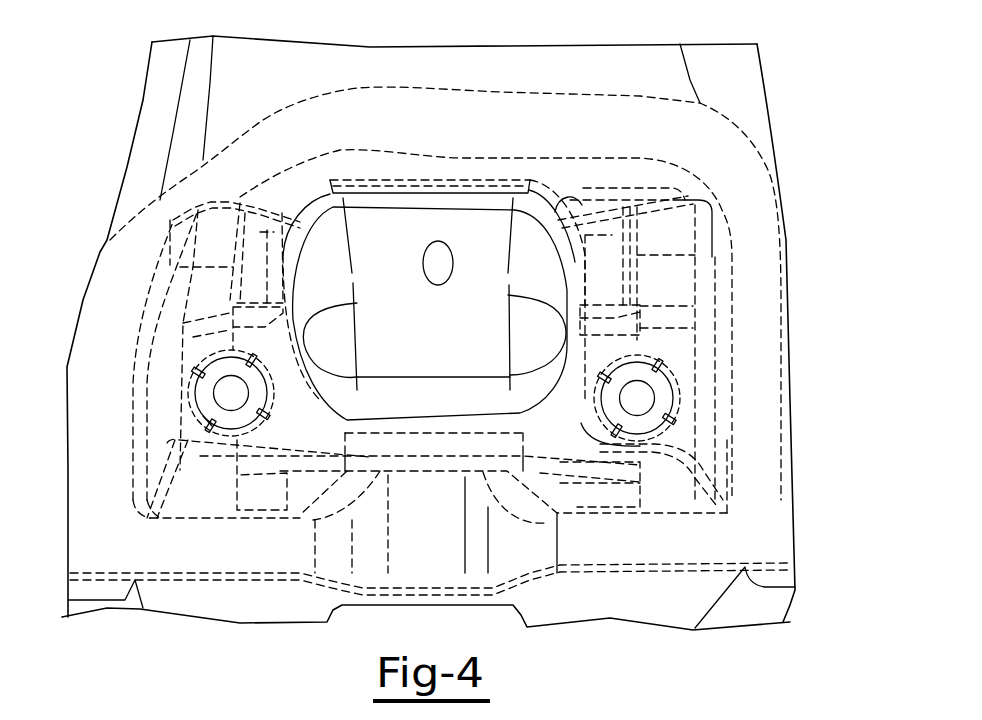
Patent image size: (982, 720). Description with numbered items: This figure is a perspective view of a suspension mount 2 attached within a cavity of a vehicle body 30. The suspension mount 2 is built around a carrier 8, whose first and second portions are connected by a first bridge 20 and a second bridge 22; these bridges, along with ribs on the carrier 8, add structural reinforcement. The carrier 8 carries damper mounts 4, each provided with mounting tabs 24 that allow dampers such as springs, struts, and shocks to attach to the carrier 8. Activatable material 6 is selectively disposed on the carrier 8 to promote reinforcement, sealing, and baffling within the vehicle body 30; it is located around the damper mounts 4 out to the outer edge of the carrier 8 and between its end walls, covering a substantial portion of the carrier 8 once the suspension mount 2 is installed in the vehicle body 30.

The suspension mount 2 is at (607, 494).
The damper mounts 4 is at (224, 388).
The activatable material 6 is at (157, 405).
The carrier 8 is at (254, 302).
The first bridge 20 is at (424, 442).
The second bridge 22 is at (427, 181).
The mounting tabs 24 is at (256, 390).
The vehicle body 30 is at (548, 104).